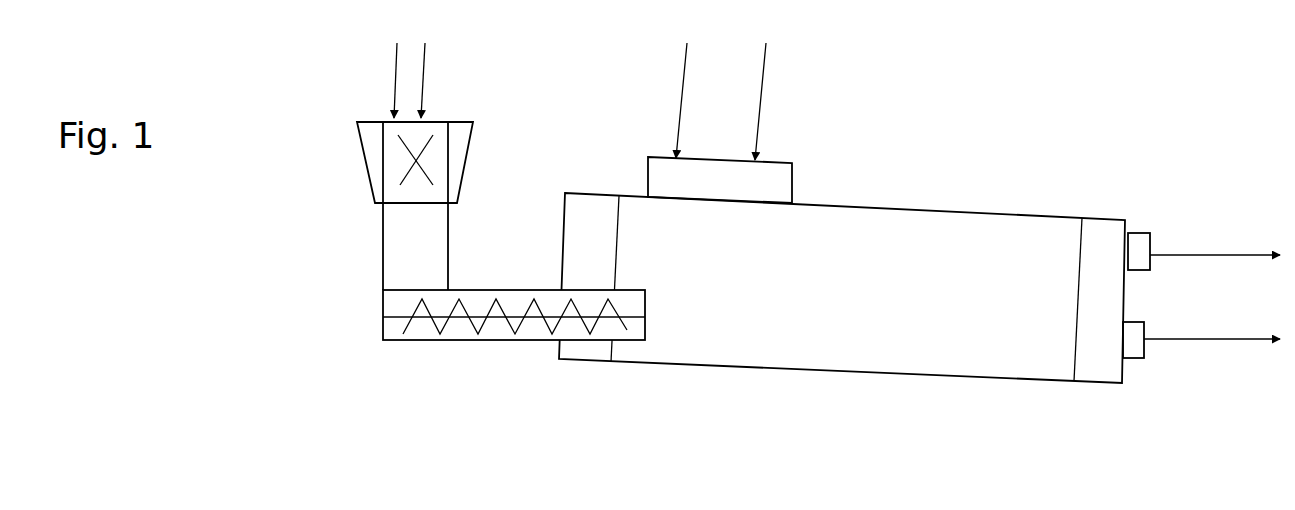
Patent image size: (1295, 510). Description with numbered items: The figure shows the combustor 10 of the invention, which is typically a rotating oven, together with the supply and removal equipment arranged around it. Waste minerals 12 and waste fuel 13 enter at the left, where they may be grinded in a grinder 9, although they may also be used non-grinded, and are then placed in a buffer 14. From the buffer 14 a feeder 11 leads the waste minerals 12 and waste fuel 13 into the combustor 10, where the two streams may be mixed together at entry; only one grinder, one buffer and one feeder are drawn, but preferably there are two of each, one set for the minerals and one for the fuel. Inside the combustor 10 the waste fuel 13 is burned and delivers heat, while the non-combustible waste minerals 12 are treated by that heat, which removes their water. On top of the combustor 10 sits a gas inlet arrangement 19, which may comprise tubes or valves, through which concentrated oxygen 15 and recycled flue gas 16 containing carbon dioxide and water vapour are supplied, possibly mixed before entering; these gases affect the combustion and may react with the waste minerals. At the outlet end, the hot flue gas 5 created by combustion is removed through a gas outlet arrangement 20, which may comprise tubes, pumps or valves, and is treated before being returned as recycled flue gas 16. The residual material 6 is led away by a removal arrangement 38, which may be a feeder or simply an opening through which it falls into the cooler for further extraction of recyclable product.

The hot flue gas 5 is at (1185, 253).
The residual material 6 is at (1189, 333).
The grinder 9 is at (415, 167).
The combustor 10 is at (898, 345).
The feeder 11 is at (507, 318).
The waste minerals 12 is at (395, 88).
The waste fuel 13 is at (423, 88).
The buffer 14 is at (427, 250).
The concentrated oxygen 15 is at (682, 85).
The recycled flue gas 16 is at (759, 122).
The gas inlet arrangement 19 is at (770, 182).
The gas outlet arrangement 20 is at (1139, 246).
The removal arrangement 38 is at (1133, 347).